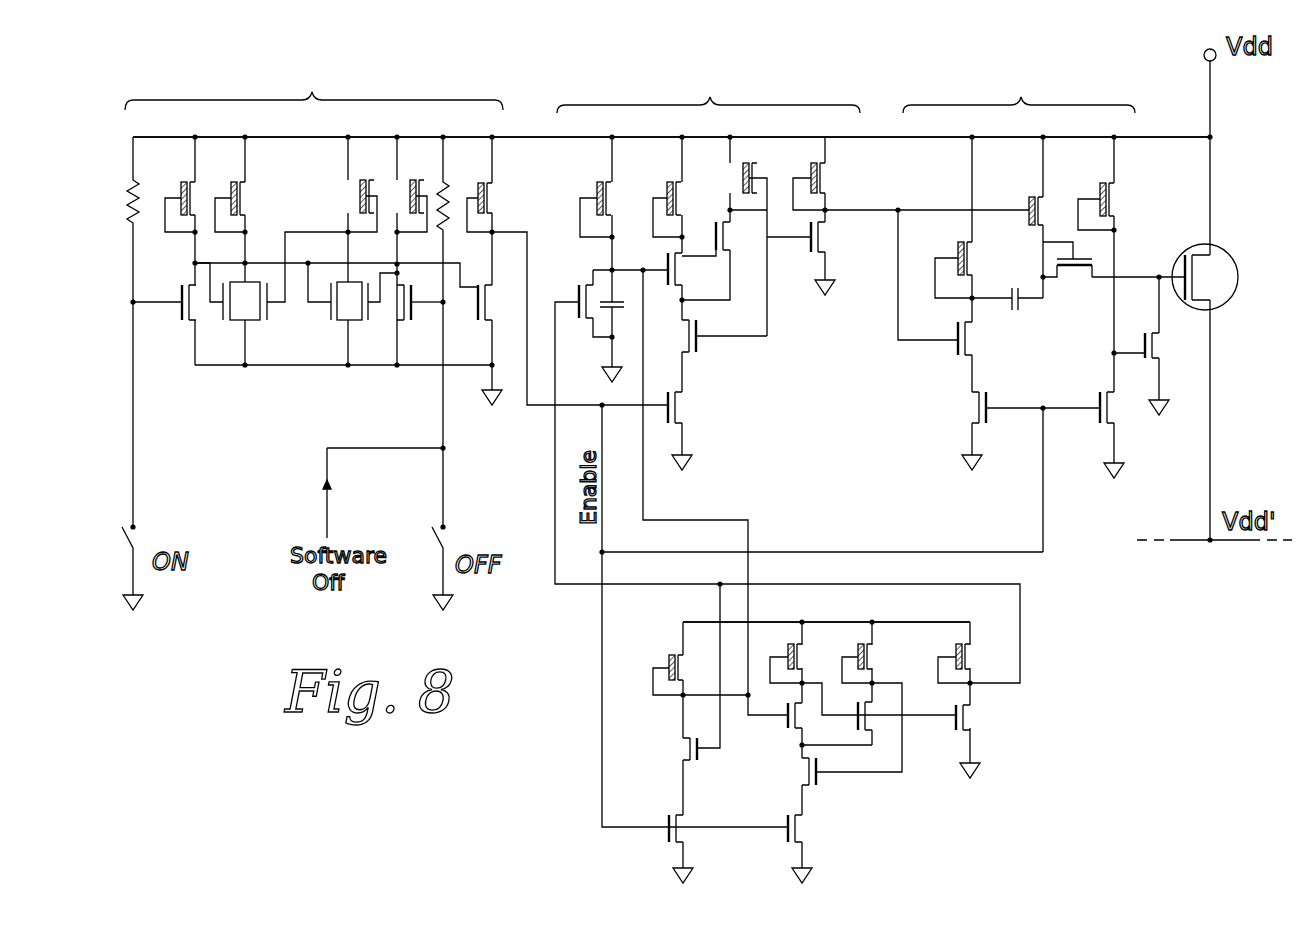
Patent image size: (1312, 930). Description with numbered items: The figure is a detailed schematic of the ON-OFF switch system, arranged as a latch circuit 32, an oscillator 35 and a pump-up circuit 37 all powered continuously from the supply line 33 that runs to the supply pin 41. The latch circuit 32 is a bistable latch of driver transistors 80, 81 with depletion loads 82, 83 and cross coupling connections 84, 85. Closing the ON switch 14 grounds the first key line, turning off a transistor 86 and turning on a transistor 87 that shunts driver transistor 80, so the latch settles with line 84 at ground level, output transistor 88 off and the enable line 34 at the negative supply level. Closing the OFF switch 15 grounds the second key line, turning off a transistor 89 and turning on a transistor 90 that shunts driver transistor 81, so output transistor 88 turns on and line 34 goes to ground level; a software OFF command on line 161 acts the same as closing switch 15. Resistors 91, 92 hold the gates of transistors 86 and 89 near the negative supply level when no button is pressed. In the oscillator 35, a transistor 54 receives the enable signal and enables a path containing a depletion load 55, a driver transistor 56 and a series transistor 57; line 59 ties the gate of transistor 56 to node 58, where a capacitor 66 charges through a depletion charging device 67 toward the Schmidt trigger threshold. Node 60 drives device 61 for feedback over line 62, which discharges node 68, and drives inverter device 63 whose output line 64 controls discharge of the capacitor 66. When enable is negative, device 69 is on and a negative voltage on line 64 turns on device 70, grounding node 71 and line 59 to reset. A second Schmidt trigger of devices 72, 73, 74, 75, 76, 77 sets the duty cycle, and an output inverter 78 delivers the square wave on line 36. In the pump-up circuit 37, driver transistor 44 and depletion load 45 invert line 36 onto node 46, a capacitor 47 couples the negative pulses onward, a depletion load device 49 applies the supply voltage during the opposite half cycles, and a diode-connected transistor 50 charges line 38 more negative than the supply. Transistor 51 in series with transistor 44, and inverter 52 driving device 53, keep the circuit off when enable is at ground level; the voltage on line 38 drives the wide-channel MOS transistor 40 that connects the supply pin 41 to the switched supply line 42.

The ON switch 14 is at (138, 530).
The OFF switch 15 is at (447, 530).
The latch circuit 32 is at (314, 87).
The Vdd line 33 is at (1167, 135).
The enable line 34 is at (1046, 522).
The oscillator 35 is at (708, 89).
The oscillator output line 36 is at (880, 209).
The pump-up circuit 37 is at (1019, 89).
The output line 38 is at (1147, 266).
The MOS transistor 40 is at (1236, 287).
The Vdd pin 41 is at (1216, 99).
The Vdd' line 42 is at (1222, 545).
The driver transistor 44 is at (950, 350).
The depletion load 45 is at (954, 253).
The node 46 is at (975, 288).
The capacitor 47 is at (1011, 312).
The depletion load device 49 is at (1028, 207).
The transistor 50 is at (1073, 270).
The transistor 51 is at (971, 410).
The inverter 52 is at (1090, 400).
The device 53 is at (1160, 345).
The transistor 54 is at (810, 833).
The depletion load 55 is at (797, 627).
The driver transistor 56 is at (774, 722).
The series transistor 57 is at (818, 782).
The node 58 is at (601, 265).
The line 59 is at (750, 527).
The node 60 is at (804, 672).
The device 61 is at (870, 690).
The feedback line 62 is at (872, 782).
The inverter device 63 is at (971, 717).
The line 64 is at (565, 588).
The capacitor 66 is at (586, 320).
The depletion charging device 67 is at (595, 188).
The node 68 is at (791, 749).
The device 69 is at (661, 833).
The device 70 is at (698, 772).
The node 71 is at (676, 702).
The device 72 is at (676, 413).
The device 73 is at (690, 338).
The device 74 is at (664, 255).
The device 75 is at (676, 197).
The device 76 is at (709, 250).
The device 77 is at (749, 173).
The output inverter 78 is at (826, 240).
The driver transistor 80 is at (270, 320).
The driver transistor 81 is at (332, 320).
The depletion load 82 is at (238, 190).
The depletion load 83 is at (347, 190).
The cross coupling connection 84 is at (263, 266).
The cross coupling connection 85 is at (299, 233).
The transistor 86 is at (182, 292).
The transistor 87 is at (230, 320).
The output transistor 88 is at (474, 318).
The transistor 89 is at (410, 328).
The transistor 90 is at (365, 328).
The resistor 91 is at (132, 201).
The resistor 92 is at (449, 180).
The OFF command line 161 is at (328, 465).